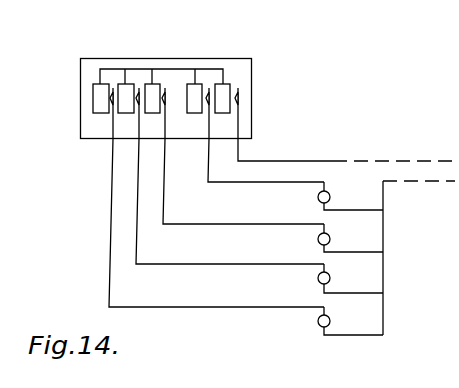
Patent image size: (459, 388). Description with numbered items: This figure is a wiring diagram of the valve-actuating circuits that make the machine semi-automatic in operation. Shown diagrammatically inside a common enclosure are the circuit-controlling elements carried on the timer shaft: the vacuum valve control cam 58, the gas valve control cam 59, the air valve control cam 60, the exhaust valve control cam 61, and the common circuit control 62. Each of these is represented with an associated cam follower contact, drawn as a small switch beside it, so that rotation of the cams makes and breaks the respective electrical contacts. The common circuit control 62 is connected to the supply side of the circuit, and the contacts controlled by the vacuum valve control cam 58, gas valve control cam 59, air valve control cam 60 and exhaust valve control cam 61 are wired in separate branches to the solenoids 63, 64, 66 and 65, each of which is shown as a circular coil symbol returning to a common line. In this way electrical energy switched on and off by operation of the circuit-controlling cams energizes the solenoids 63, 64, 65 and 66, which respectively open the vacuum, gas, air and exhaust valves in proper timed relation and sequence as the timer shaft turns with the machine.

The vacuum valve control cam 58 is at (104, 80).
The gas valve control cam 59 is at (129, 80).
The air valve control cam 60 is at (157, 80).
The exhaust valve control cam 61 is at (199, 80).
The common circuit control 62 is at (228, 80).
The solenoid 63 is at (329, 193).
The solenoid 64 is at (329, 236).
The solenoid 65 is at (329, 318).
The solenoid 66 is at (329, 275).